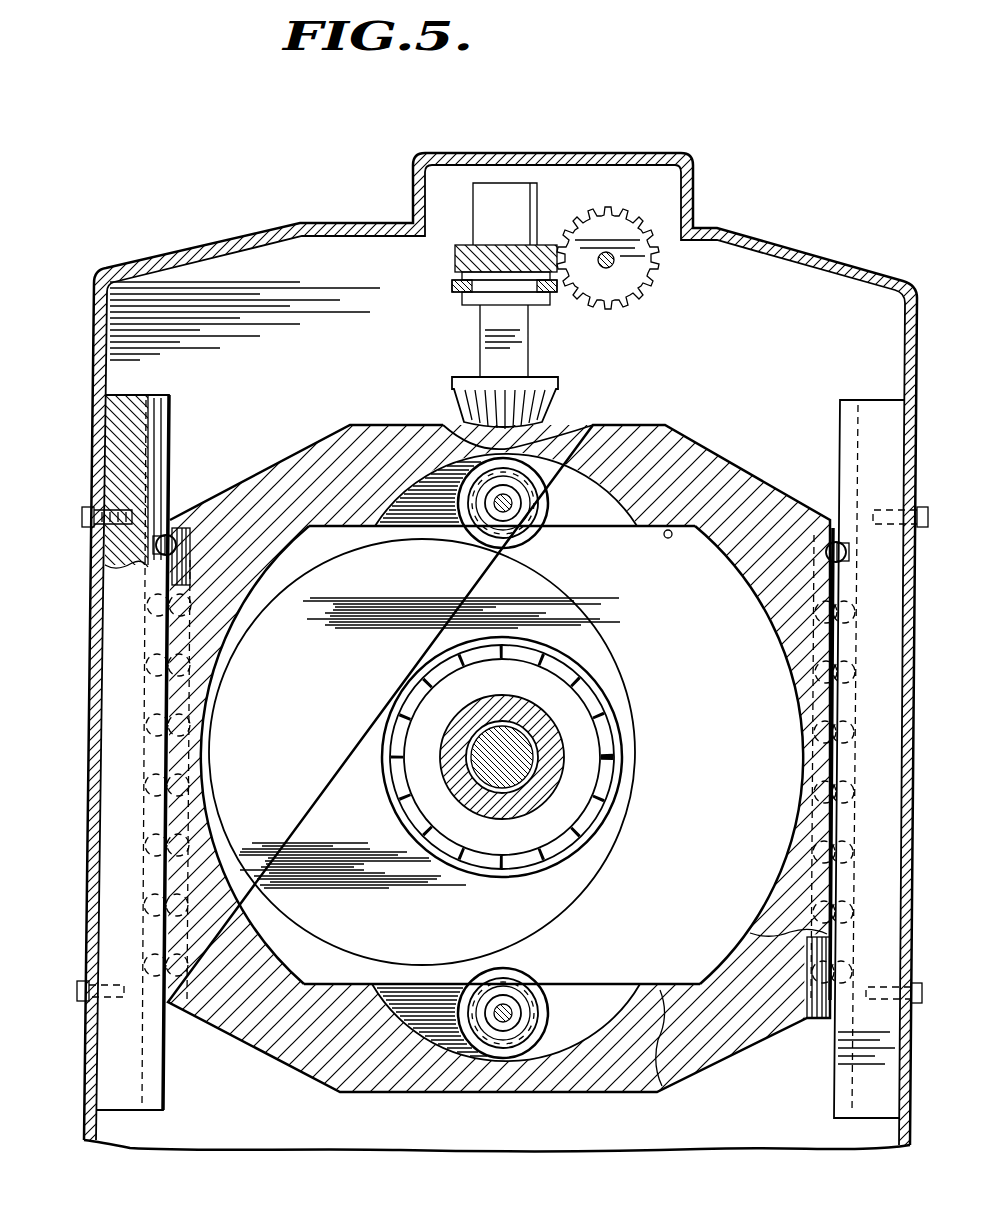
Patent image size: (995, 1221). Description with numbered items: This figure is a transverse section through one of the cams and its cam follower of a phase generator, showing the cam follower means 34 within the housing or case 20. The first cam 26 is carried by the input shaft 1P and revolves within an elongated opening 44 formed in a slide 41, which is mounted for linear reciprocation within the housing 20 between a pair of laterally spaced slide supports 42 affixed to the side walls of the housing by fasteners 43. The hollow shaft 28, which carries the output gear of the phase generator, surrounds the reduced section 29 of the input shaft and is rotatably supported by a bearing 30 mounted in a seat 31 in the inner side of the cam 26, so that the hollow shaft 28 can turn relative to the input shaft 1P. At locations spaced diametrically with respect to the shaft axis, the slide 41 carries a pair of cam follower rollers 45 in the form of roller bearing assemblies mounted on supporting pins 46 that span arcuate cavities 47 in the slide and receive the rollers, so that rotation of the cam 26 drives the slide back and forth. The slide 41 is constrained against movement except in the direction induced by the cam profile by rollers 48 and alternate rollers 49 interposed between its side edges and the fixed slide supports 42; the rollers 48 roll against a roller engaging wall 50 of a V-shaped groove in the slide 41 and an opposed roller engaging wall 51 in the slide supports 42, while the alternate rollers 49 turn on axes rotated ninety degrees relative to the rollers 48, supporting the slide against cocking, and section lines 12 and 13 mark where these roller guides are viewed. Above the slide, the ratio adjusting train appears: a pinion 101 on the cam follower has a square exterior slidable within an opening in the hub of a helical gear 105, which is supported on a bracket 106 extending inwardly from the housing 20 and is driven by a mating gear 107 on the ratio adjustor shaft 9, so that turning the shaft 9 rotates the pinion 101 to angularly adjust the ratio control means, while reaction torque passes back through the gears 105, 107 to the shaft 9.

The housing 20 is at (790, 246).
The slide 41 is at (750, 480).
The cam follower means 34 is at (690, 435).
The elongated opening 44 is at (668, 530).
The first cam 26 is at (567, 888).
The bearing 30 is at (592, 820).
The seat 31 is at (416, 672).
The hollow shaft 28 is at (548, 742).
The reduced section 29 is at (502, 757).
The input shaft 1P is at (530, 785).
The cam follower rollers 45 is at (527, 535).
The supporting pins 46 is at (505, 503).
The arcuate cavities 47 is at (580, 472).
The helical gear 105 is at (455, 258).
The bracket 106 is at (452, 286).
The pinion 101 is at (456, 402).
The mating gear 107 is at (614, 226).
The ratio adjustor shaft 9 is at (613, 265).
The slide supports 42 is at (115, 790).
The roller engaging wall 51 is at (165, 397).
The rollers 48 is at (160, 538).
The alternate rollers 49 is at (168, 622).
The roller engaging wall 50 is at (190, 583).
The fasteners 43 is at (105, 545).
The section line 12- 12 is at (247, 545).
The section line 13- 13 is at (207, 965).